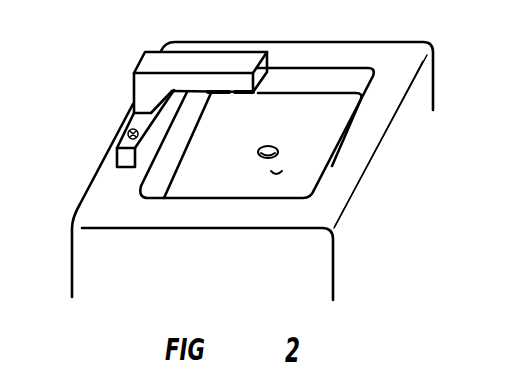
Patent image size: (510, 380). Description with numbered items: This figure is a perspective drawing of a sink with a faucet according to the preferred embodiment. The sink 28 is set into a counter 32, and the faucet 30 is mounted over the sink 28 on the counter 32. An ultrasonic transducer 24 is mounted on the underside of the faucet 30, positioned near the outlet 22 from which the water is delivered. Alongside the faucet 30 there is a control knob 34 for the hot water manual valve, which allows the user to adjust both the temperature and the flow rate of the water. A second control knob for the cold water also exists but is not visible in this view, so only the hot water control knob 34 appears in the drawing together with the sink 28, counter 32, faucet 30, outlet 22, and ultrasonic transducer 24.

The outlet 22 is at (248, 95).
The ultrasonic transducer 24 is at (217, 96).
The sink 28 is at (271, 130).
The faucet 30 is at (143, 58).
The counter 32 is at (106, 182).
The control knob 34 is at (128, 134).